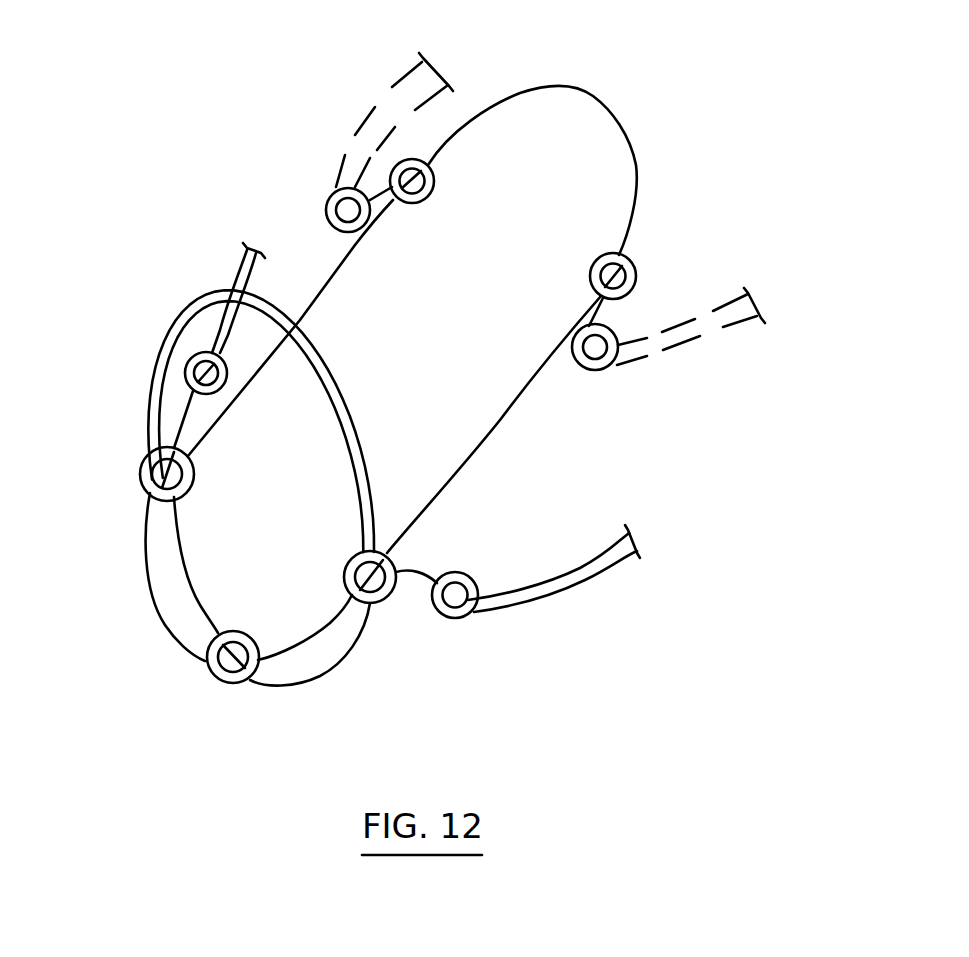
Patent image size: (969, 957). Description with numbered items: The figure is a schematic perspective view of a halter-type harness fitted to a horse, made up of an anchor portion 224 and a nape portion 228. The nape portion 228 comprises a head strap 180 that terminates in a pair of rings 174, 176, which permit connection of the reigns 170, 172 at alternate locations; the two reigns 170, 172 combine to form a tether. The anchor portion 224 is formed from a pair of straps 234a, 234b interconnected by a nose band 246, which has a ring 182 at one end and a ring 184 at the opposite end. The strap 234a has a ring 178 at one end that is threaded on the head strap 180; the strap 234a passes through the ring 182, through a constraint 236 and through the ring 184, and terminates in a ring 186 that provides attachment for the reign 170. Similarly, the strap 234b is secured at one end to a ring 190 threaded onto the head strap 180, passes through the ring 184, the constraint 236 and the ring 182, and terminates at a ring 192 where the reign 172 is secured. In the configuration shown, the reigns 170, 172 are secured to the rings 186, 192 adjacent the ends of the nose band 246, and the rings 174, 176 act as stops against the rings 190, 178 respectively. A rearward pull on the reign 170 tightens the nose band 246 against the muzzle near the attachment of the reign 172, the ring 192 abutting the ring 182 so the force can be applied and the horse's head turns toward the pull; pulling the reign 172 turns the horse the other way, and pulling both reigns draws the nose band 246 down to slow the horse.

The reign 170 is at (395, 88).
The reign 172 is at (687, 345).
The ring 174 is at (326, 208).
The ring 176 is at (588, 372).
The ring 178 is at (591, 265).
The head strap 180 is at (597, 97).
The ring 182 is at (390, 603).
The ring 184 is at (143, 467).
The ring 186 is at (223, 388).
The ring 190 is at (434, 182).
The ring 192 is at (472, 572).
The anchor portion 224 is at (120, 352).
The nape portion 228 is at (685, 157).
The strap 234a is at (146, 555).
The strap 234b is at (188, 565).
The constraint 236 is at (225, 683).
The nose band 246 is at (352, 420).